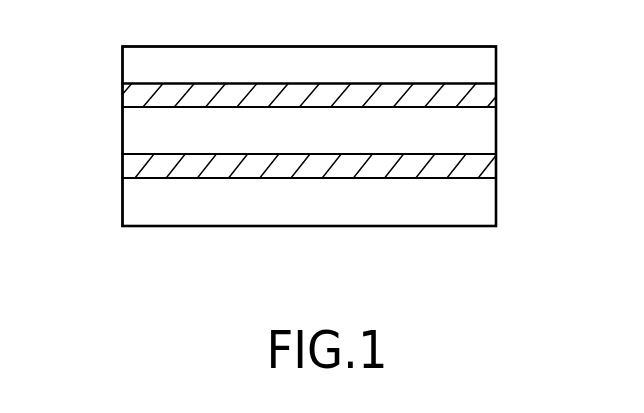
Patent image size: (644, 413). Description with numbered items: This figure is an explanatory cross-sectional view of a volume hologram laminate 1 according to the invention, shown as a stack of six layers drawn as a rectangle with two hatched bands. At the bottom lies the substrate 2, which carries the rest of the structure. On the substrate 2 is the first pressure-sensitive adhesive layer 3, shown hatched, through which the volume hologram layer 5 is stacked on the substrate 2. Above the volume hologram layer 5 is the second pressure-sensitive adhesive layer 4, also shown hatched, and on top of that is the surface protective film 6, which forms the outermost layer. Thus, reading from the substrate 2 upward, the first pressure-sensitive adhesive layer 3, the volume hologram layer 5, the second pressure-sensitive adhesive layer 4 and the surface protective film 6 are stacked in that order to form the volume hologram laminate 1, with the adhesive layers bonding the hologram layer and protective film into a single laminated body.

The volume hologram laminate 1 is at (100, 108).
The substrate 2 is at (488, 208).
The first pressure-sensitive adhesive layer 3 is at (490, 167).
The second pressure-sensitive adhesive layer 4 is at (492, 95).
The volume hologram layer 5 is at (488, 134).
The surface protective film 6 is at (493, 63).